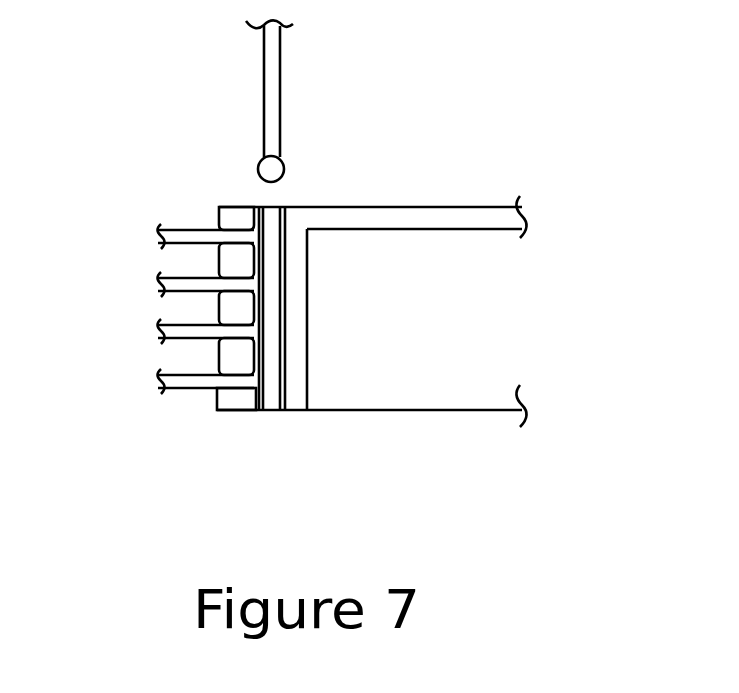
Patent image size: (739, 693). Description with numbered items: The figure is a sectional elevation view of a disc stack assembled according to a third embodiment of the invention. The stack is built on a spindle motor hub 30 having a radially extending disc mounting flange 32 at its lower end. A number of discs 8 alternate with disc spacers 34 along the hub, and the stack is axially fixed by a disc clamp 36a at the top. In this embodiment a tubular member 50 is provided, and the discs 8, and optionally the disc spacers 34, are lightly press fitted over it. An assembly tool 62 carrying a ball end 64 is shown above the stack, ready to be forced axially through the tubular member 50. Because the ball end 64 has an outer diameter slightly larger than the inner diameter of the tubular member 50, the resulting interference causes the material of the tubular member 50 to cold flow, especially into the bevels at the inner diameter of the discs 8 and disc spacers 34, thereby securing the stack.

The disc 8 is at (178, 383).
The spindle motor hub 30 is at (430, 218).
The disc mounting flange 32 is at (234, 400).
The disc spacer 34 is at (232, 313).
The disc clamp 36a is at (232, 217).
The tubular member 50 is at (286, 290).
The assembly tool 62 is at (264, 88).
The ball end 64 is at (275, 167).